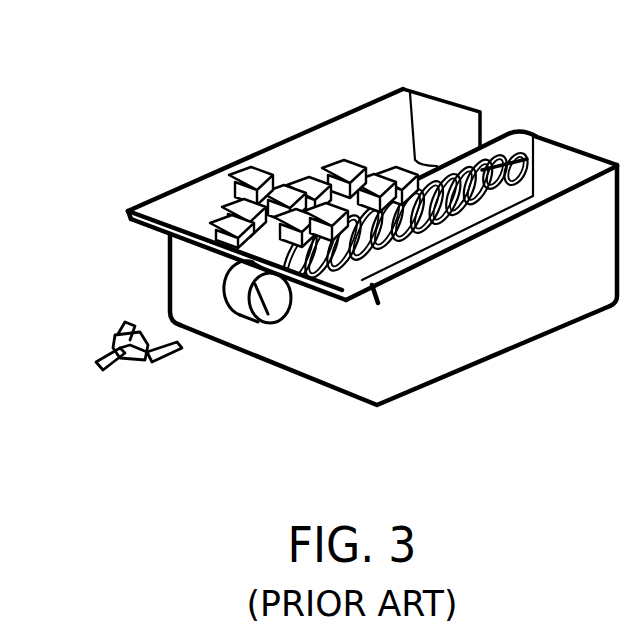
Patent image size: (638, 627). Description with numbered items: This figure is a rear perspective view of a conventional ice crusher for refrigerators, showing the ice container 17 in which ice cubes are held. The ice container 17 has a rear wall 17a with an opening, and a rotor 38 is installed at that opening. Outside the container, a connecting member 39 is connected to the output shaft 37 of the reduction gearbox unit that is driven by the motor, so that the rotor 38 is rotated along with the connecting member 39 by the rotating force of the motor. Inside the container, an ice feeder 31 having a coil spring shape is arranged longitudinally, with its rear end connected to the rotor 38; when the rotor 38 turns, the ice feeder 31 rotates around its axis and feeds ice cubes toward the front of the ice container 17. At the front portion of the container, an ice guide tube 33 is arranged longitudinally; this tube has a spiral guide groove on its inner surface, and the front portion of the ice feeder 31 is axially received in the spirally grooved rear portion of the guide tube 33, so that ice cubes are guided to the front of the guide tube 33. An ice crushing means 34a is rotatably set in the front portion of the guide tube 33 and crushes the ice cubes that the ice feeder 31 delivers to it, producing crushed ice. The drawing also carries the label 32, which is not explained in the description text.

The ice container 17 is at (255, 156).
The rear wall 17a is at (345, 384).
The ice feeder 31 is at (384, 180).
The rear plate 32 is at (478, 110).
The ice guide tube 33 is at (403, 88).
The ice crushing means 34a is at (508, 132).
The output shaft 37 is at (97, 347).
The rotor 38 is at (238, 318).
The connecting member 39 is at (117, 332).